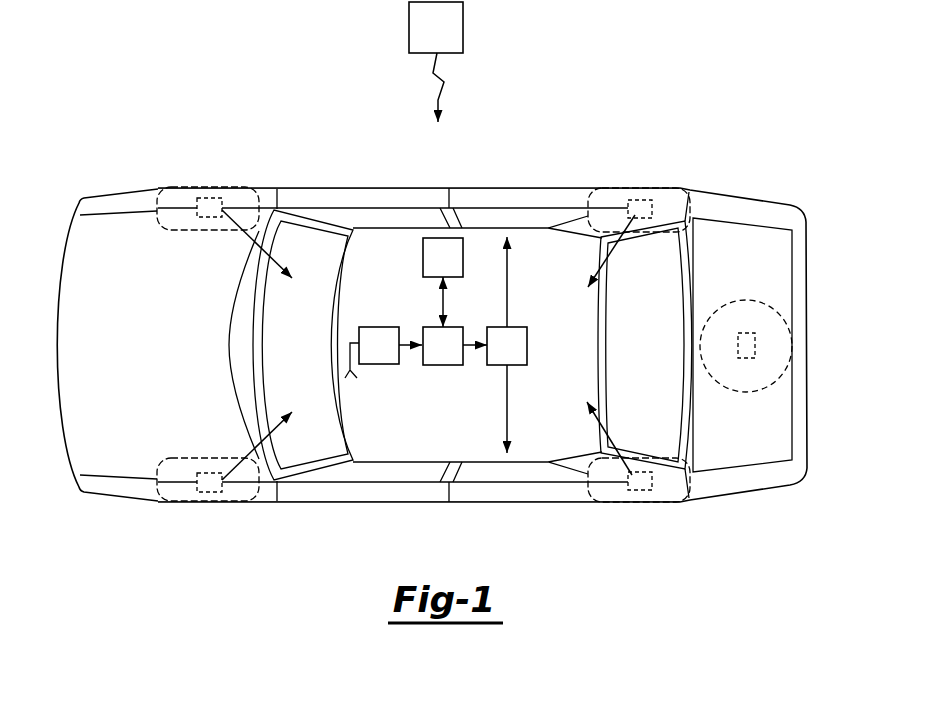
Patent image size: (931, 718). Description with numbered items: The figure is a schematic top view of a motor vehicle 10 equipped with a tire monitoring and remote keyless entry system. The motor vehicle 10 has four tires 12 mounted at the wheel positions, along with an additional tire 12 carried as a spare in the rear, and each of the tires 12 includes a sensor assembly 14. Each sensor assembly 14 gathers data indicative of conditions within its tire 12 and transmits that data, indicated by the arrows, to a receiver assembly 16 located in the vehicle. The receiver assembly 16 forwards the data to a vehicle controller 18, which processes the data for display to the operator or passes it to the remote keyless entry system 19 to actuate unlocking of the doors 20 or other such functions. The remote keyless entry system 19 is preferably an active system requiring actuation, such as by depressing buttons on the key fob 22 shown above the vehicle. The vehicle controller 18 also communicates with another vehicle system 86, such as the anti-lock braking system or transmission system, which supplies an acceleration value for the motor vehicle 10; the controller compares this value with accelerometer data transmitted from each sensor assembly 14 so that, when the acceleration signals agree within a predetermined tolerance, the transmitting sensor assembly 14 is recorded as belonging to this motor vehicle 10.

The motor vehicle 10 is at (800, 207).
The tire 12 is at (168, 203).
The sensor assembly 14 is at (209, 198).
The receiver assembly 16 is at (369, 358).
The vehicle controller 18 is at (433, 358).
The remote keyless entry system 19 is at (497, 358).
The door 20 is at (396, 196).
The key fob 22 is at (426, 39).
The vehicle system 86 is at (433, 270).